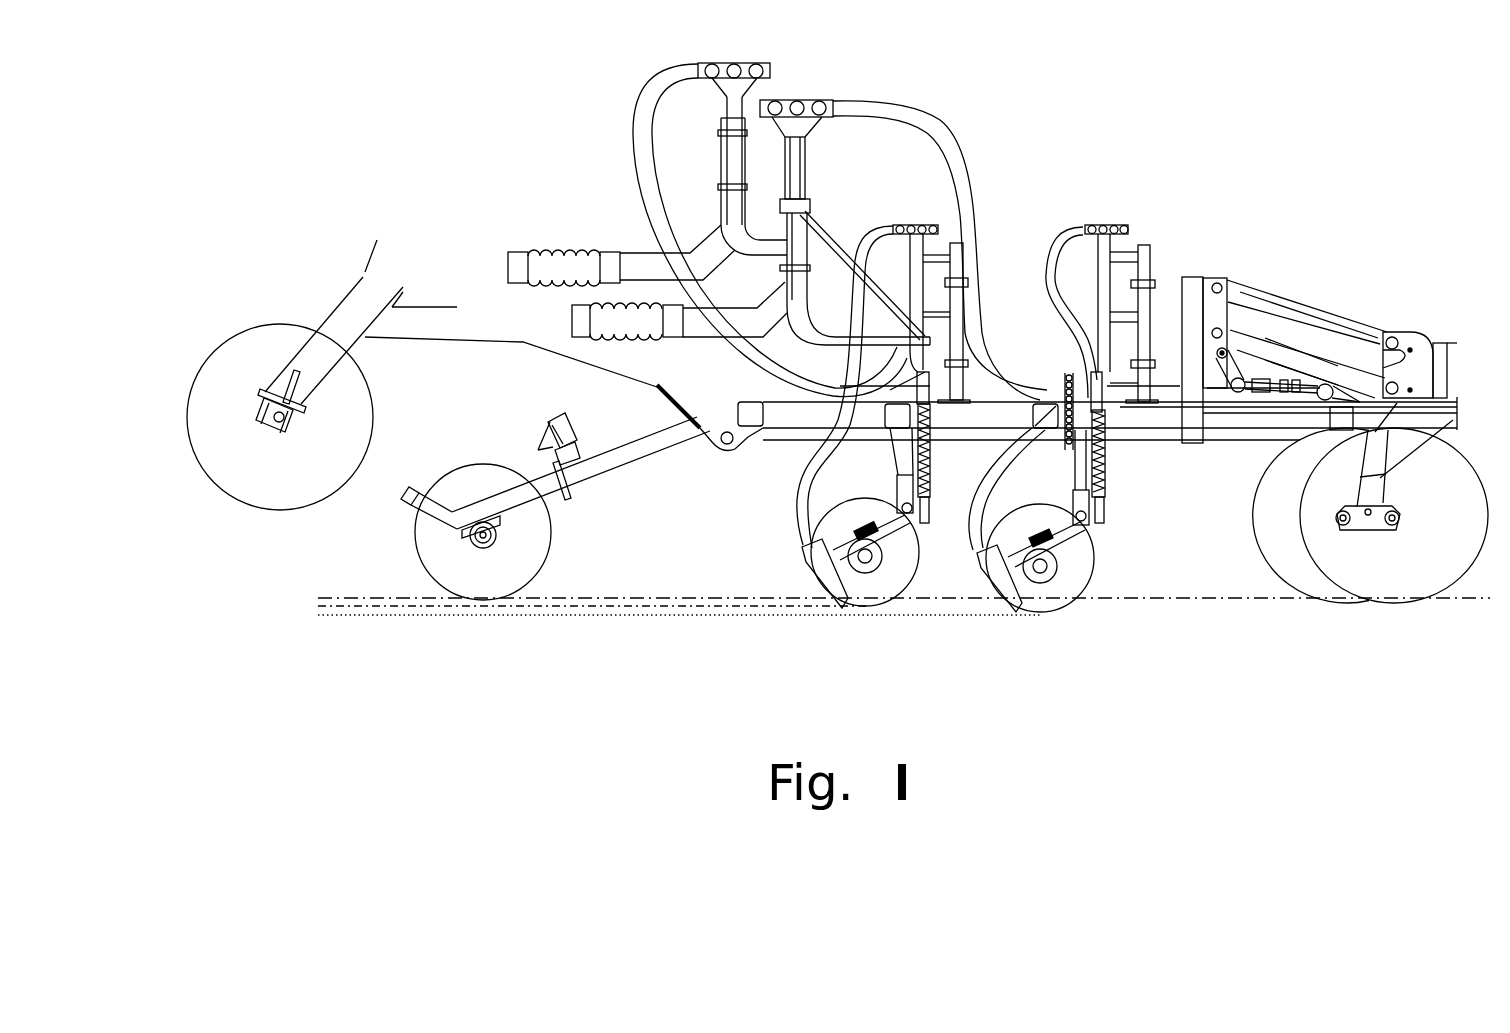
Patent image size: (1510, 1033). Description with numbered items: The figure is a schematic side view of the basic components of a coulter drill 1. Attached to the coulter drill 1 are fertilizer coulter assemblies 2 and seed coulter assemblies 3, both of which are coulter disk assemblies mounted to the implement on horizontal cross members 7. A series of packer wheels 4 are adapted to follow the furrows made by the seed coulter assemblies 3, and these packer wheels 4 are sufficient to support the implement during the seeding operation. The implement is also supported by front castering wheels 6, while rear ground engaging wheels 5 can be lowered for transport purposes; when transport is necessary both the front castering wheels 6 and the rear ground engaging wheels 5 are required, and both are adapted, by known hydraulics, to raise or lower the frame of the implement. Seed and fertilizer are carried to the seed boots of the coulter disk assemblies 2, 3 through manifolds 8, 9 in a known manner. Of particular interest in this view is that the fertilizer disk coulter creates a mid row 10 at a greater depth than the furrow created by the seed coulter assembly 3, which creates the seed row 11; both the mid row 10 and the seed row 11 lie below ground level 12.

The coulter drill 1 is at (1046, 211).
The fertilizer coulter assembly 2 is at (1073, 588).
The seed coulter assembly 3 is at (892, 586).
The packer wheel 4 is at (550, 548).
The rear ground engaging wheel 5 is at (233, 493).
The front castering wheel 6 is at (1470, 503).
The horizontal cross member 7 is at (886, 415).
The manifold 8 is at (800, 96).
The manifold 9 is at (730, 62).
The mid row 10 is at (937, 615).
The seed row 11 is at (808, 607).
The ground level 12 is at (693, 598).